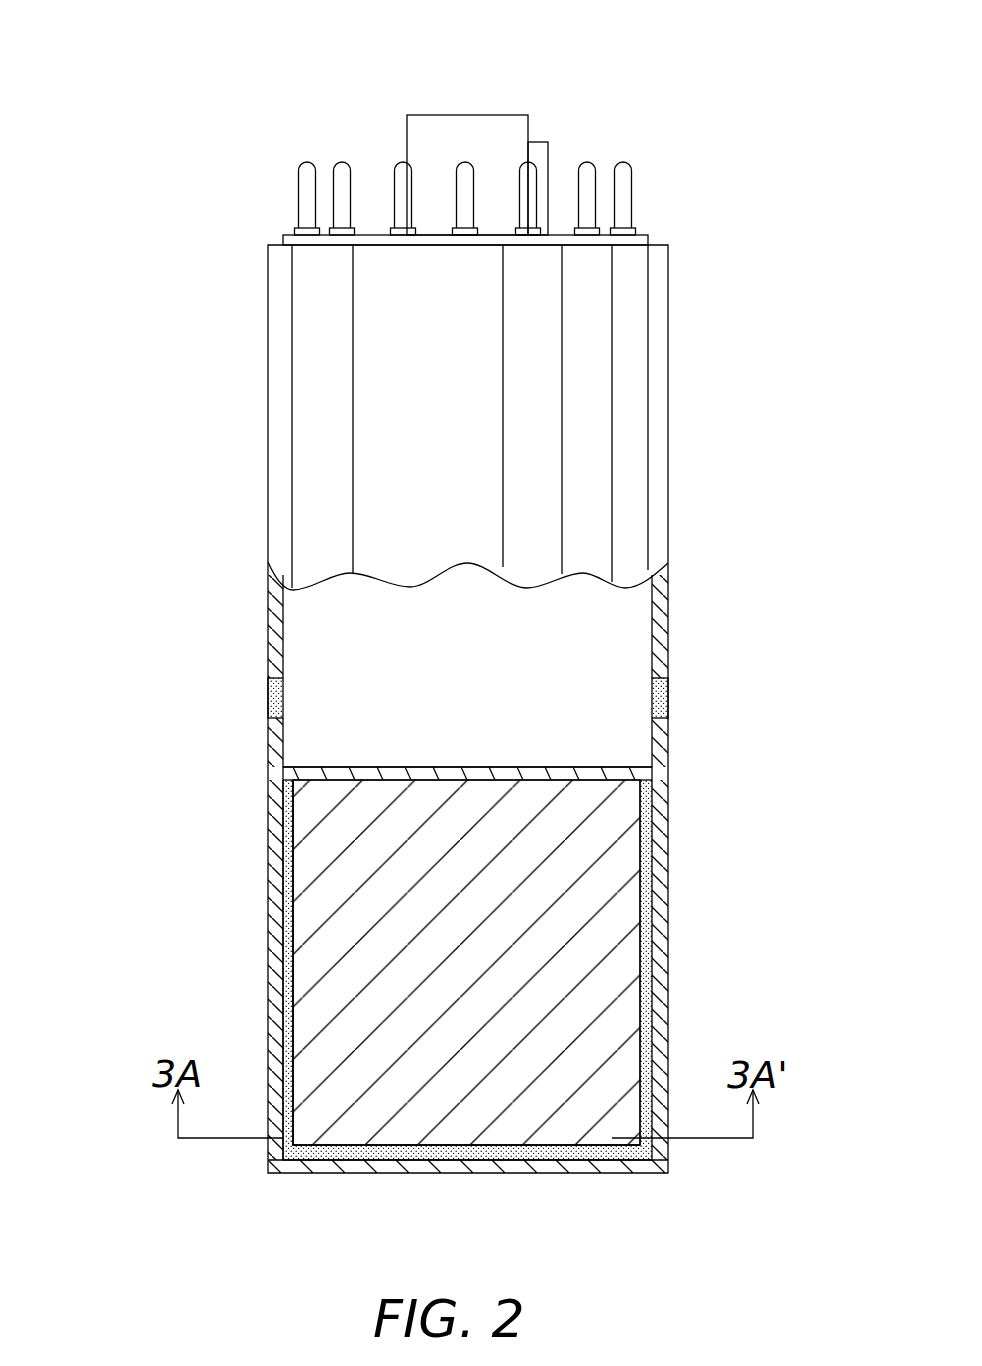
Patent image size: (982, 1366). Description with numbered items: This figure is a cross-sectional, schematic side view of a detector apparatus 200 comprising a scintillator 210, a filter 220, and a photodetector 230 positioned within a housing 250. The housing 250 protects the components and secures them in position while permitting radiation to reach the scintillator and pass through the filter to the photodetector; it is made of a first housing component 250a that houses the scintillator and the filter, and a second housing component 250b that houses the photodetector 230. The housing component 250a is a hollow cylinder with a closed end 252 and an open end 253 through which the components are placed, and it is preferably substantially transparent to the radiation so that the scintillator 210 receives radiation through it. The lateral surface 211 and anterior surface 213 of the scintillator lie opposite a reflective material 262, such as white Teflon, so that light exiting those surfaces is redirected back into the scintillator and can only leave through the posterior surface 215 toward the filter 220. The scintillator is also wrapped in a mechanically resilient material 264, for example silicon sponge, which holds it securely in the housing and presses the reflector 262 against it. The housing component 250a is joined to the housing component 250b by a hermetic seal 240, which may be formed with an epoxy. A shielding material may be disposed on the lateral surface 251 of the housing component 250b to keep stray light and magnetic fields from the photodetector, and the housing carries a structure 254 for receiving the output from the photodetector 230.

The detector apparatus 200 is at (188, 50).
The structure for receiving an output from photodetector 254 is at (608, 152).
The lateral surface of housing component 250b 251 is at (670, 335).
The housing 250 is at (260, 412).
The second housing component 250b is at (668, 602).
The open end 253 is at (617, 730).
The hermetic seal 240 is at (668, 695).
The photodetector 230 is at (303, 653).
The filter 220 is at (543, 763).
The posterior surface 215 is at (602, 767).
The lateral surface of the scintillator 211 is at (640, 853).
The first housing component 250a is at (667, 908).
The scintillator 210 is at (605, 1010).
The mechanically resilient material 264 is at (282, 990).
The reflective material 262 is at (293, 1023).
The anterior surface 213 is at (440, 1145).
The closed end 252 is at (545, 1173).